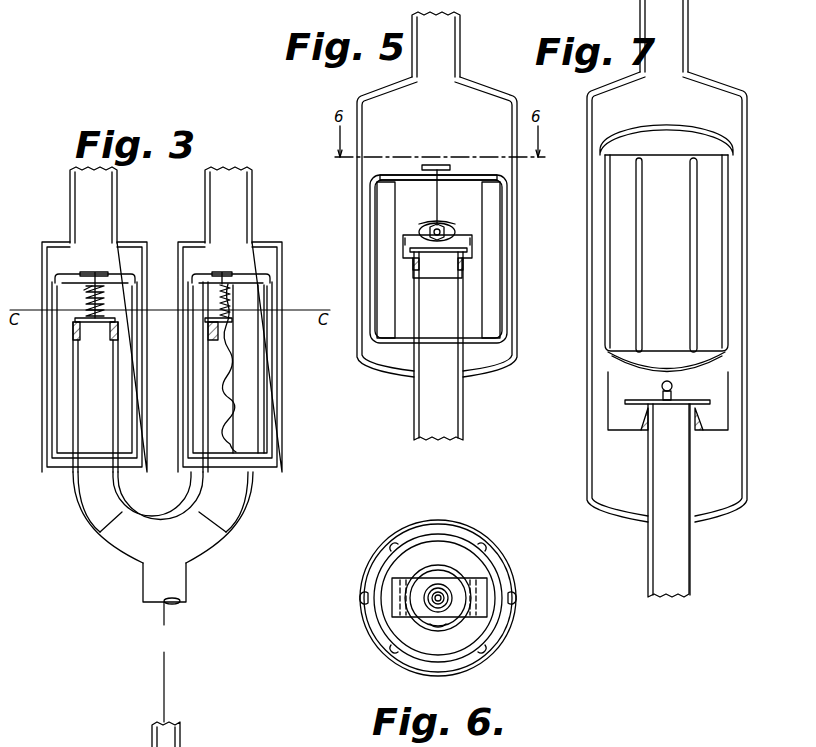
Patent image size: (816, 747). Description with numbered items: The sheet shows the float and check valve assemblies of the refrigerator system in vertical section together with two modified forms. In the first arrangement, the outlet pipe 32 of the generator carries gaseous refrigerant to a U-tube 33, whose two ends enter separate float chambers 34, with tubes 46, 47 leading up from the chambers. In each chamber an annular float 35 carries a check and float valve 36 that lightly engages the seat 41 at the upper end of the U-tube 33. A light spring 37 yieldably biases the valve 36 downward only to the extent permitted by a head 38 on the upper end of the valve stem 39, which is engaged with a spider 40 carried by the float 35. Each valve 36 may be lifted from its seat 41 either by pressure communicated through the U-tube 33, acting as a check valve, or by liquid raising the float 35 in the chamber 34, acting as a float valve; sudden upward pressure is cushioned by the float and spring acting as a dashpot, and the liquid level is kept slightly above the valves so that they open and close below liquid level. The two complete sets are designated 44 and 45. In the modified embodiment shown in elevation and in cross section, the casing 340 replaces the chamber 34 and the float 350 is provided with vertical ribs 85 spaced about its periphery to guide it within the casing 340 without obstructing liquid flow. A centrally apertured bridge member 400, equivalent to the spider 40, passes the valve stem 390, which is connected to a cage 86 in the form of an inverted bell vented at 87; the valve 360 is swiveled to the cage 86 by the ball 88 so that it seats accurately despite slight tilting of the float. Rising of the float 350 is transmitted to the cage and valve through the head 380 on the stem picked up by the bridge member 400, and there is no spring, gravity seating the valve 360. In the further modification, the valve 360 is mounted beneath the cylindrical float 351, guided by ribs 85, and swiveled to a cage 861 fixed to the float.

In FIG. 3, the outlet pipe 32 is at (150, 575).
In FIG. 3, the U-tube 33 is at (213, 540).
In FIG. 5, the U-tube 33 is at (458, 425).
In FIG. 7, the U-tube 33 is at (697, 578).
In FIG. 3, the float chamber 34 is at (45, 400).
In FIG. 3, the float 35 is at (62, 417).
In FIG. 3, the check and float valve 36 is at (103, 322).
In FIG. 3, the spring 37 is at (100, 300).
In FIG. 3, the head 38 is at (93, 273).
In FIG. 3, the valve stem 39 is at (84, 290).
In FIG. 3, the spider 40 is at (193, 275).
In FIG. 3, the seat 41 is at (97, 340).
In FIG. 3, the valve set 44 is at (58, 478).
In FIG. 3, the valve set 45 is at (290, 465).
In FIG. 3, the inlet tube 46 is at (117, 217).
In FIG. 3, the inlet tube 47 is at (252, 217).
In FIG. 5, the inlet tube 47 is at (460, 62).
In FIG. 7, the inlet tube 47 is at (688, 62).
In FIG. 5, the rib 85 is at (372, 287).
In FIG. 7, the rib 85 is at (735, 216).
In FIG. 6, the rib 85 is at (470, 530).
In FIG. 5, the cage 86 is at (405, 232).
In FIG. 7, the cage 86 is at (667, 390).
In FIG. 6, the cage 86 is at (455, 622).
In FIG. 5, the vent 87 is at (405, 238).
In FIG. 5, the ball 88 is at (445, 230).
In FIG. 5, the casing 340 is at (520, 283).
In FIG. 6, the casing 340 is at (515, 598).
In FIG. 5, the float 350 is at (507, 330).
In FIG. 6, the float 350 is at (478, 563).
In FIG. 7, the float 351 is at (718, 291).
In FIG. 5, the valve 360 is at (478, 250).
In FIG. 7, the valve 360 is at (718, 420).
In FIG. 5, the head 380 is at (430, 165).
In FIG. 6, the head 380 is at (452, 610).
In FIG. 5, the valve stem 390 is at (437, 217).
In FIG. 6, the valve stem 390 is at (450, 597).
In FIG. 5, the bridge member 400 is at (462, 175).
In FIG. 6, the bridge member 400 is at (395, 590).
In FIG. 7, the cage 861 is at (730, 405).